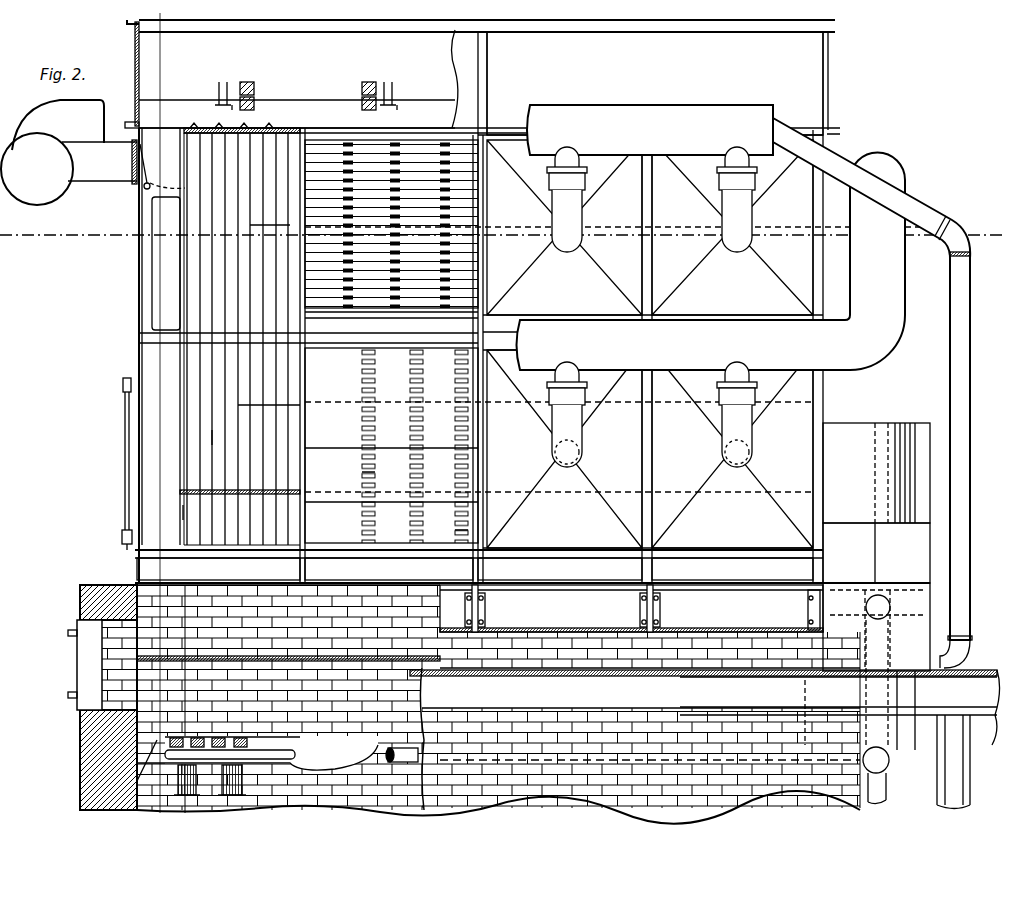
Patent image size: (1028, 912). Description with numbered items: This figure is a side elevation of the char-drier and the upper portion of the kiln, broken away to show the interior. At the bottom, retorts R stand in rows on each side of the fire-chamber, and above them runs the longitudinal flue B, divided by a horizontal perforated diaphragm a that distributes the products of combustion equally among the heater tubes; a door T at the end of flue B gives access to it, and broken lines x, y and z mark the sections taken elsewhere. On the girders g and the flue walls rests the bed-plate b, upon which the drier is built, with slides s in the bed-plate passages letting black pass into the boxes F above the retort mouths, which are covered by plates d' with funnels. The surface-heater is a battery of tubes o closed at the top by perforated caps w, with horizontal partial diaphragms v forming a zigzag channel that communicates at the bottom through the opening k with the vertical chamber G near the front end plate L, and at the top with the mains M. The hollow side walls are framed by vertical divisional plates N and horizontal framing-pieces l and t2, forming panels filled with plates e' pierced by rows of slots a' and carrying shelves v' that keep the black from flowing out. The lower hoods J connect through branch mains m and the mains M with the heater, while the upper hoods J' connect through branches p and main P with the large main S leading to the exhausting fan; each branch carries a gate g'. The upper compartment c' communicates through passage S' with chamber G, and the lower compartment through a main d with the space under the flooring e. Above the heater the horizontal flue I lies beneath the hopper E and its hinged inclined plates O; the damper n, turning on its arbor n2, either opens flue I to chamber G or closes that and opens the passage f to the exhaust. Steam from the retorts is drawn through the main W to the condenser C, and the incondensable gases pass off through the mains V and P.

The large main S is at (52, 152).
The passage f is at (99, 161).
The damper n is at (150, 160).
The arbor n2 is at (144, 188).
The inclined plates O is at (297, 72).
The horizontal flue I is at (297, 115).
The hopper E is at (655, 83).
The broken line x is at (169, 410).
The broken line z is at (509, 238).
The perforated cap w is at (252, 128).
The horizontal framing-piece t2 is at (335, 128).
The passage S' is at (134, 336).
The front end plate L is at (137, 297).
The vertical channel G is at (233, 468).
The horizontal partial diaphragm v is at (308, 349).
The tube o is at (244, 436).
The opening k is at (182, 513).
The horizontal framing-piece l is at (152, 530).
The upper compartment c' is at (391, 250).
The plate e' is at (559, 445).
The slot a' is at (415, 498).
The ledge or shelf v' is at (474, 359).
The upper hood J' is at (650, 227).
The hood J is at (650, 449).
The vertical divisional plate N is at (487, 437).
The main M is at (711, 261).
The main P is at (650, 130).
The main V is at (965, 493).
The gate g' is at (663, 276).
The branch p is at (652, 221).
The branch main m is at (590, 430).
The main d is at (876, 503).
The bed-plate b is at (830, 590).
The condenser C is at (876, 693).
The flooring e is at (705, 731).
The longitudinal flue B is at (481, 704).
The broken line y is at (288, 596).
The horizontal perforated diaphragm a is at (288, 647).
The girder g is at (631, 608).
The box F is at (79, 778).
The door T is at (85, 665).
The plate d' is at (257, 739).
The main W is at (400, 748).
The retort R is at (197, 767).